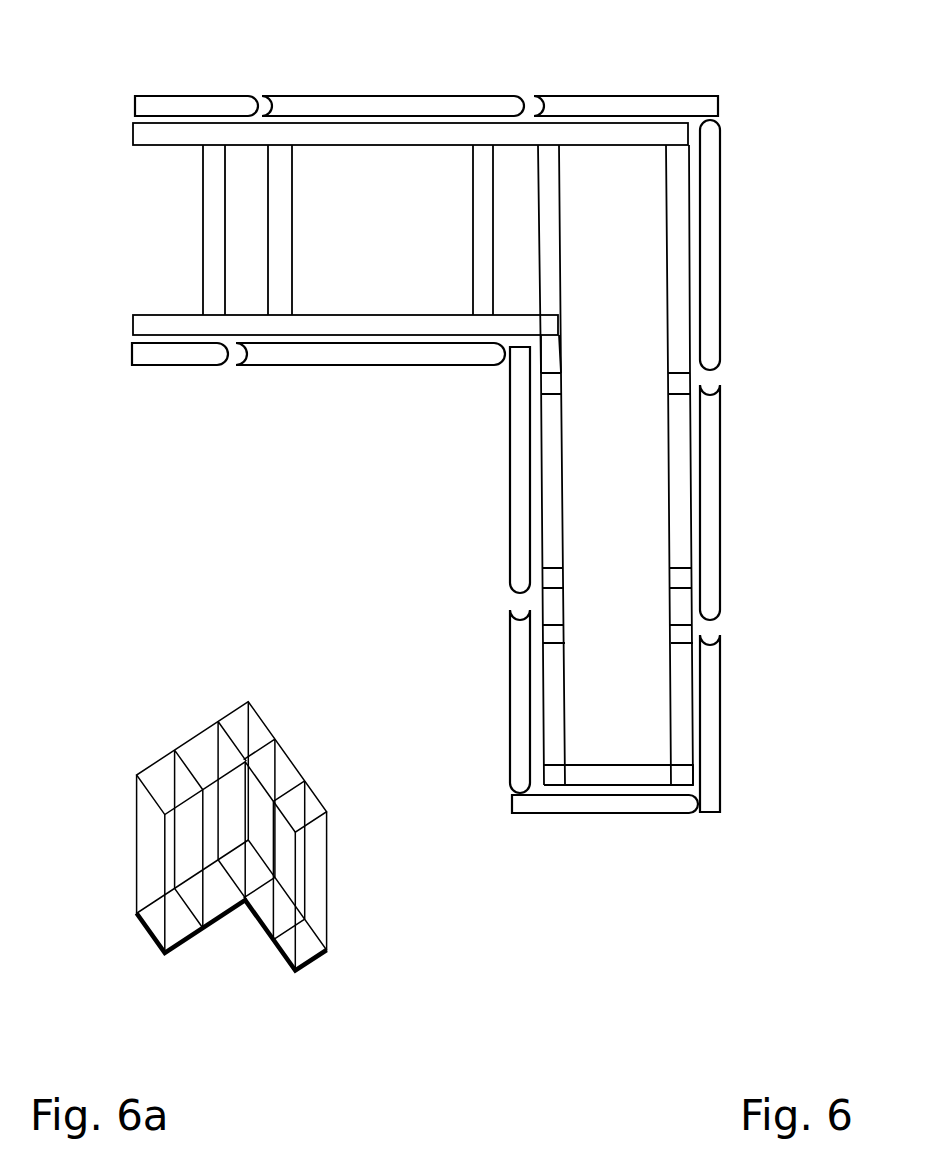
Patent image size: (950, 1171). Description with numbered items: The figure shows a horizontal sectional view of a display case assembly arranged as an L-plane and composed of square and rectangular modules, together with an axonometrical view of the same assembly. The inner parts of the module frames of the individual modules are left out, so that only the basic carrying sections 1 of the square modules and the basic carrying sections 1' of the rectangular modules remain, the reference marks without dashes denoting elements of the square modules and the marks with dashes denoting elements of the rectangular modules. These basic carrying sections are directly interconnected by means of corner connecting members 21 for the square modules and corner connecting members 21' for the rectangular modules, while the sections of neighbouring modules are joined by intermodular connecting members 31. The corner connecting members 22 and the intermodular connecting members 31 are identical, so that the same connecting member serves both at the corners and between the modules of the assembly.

The basic carrying section 1 is at (476, 312).
The basic carrying section of rectangular module 1' is at (475, 460).
The corner connecting member 21 is at (467, 285).
The corner connecting member of rectangular module 21' is at (559, 450).
The corner connecting member 22 is at (483, 327).
The intermodular connecting member 31 is at (512, 325).